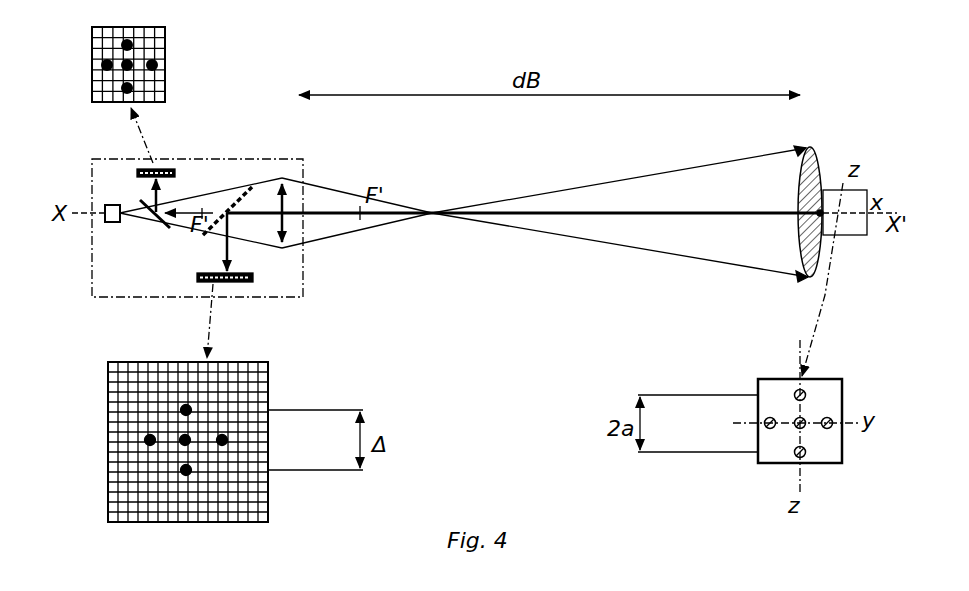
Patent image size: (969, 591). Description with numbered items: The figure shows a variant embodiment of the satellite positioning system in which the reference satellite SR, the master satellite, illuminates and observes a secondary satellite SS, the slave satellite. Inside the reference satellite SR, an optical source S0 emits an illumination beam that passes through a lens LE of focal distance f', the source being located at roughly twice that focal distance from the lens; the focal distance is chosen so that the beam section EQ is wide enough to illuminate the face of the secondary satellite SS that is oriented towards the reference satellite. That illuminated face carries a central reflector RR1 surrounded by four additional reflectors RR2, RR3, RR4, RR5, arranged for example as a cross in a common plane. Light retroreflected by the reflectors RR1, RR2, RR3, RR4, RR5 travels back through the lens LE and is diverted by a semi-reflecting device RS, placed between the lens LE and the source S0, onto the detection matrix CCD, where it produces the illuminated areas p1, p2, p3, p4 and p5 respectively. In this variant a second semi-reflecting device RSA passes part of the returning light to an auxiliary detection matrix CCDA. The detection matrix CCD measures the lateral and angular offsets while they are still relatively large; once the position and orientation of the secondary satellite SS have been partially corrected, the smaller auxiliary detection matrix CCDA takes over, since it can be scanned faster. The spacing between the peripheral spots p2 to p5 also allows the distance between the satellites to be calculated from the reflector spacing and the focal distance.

The auxiliary detection matrix CCDA is at (218, 52).
The detection matrix CCD is at (220, 283).
The reference satellite SR is at (222, 158).
The semi-reflecting device RS is at (243, 192).
The semi-reflecting device RSA is at (138, 222).
The optical source S0 is at (105, 210).
The lens LE is at (286, 185).
The beam section EQ is at (814, 150).
The secondary satellite SS is at (840, 237).
The reflector RR1 is at (828, 212).
The reflector RR2 is at (764, 423).
The reflector RR3 is at (806, 393).
The reflector RR4 is at (829, 429).
The reflector RR5 is at (802, 457).
The illuminated area p1 is at (185, 440).
The illuminated area p2 is at (150, 440).
The illuminated area p3 is at (186, 410).
The illuminated area p4 is at (222, 440).
The illuminated area p5 is at (186, 470).